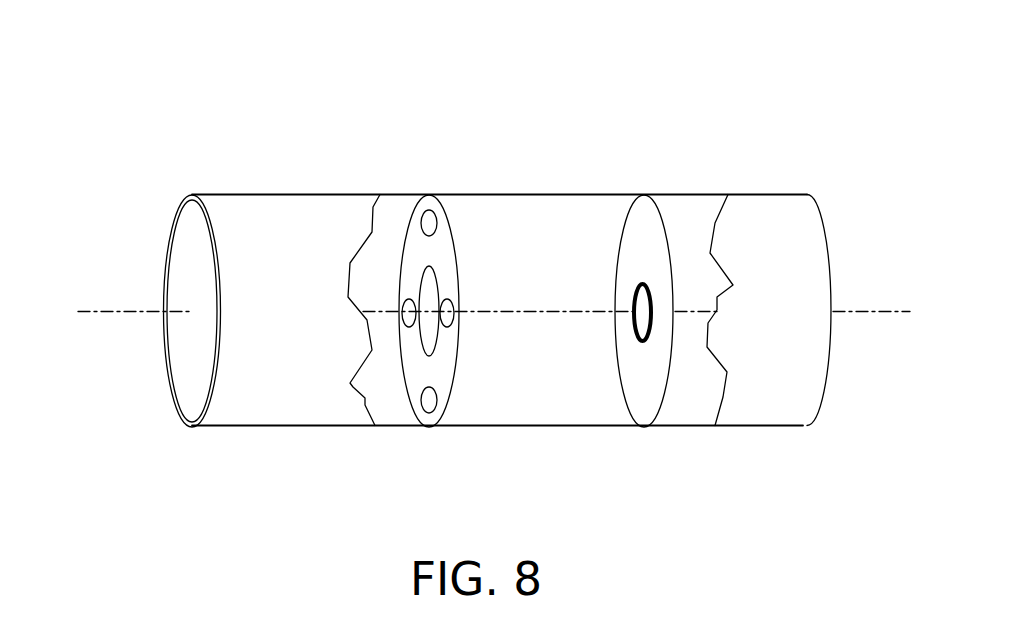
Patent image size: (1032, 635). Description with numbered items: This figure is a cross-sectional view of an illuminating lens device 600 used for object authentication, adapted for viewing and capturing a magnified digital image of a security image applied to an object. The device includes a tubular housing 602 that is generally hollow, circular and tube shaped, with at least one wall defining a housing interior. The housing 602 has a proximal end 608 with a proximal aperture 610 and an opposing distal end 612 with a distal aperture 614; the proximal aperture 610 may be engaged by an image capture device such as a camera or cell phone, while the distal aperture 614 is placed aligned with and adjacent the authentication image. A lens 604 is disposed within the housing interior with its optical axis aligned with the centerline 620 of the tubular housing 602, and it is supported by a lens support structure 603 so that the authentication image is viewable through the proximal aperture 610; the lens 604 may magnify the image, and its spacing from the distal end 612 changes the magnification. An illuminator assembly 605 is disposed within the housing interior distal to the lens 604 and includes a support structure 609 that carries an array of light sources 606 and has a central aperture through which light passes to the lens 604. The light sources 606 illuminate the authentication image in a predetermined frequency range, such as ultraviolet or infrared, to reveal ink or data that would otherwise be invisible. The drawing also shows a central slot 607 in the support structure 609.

The illuminating lens device 600 is at (380, 63).
The tubular housing 602 is at (567, 192).
The lens support structure 603 is at (665, 232).
The lens 604 is at (636, 314).
The illuminator assembly 605 is at (497, 364).
The light sources 606 is at (429, 208).
The central slot 607 is at (437, 335).
The proximal end 608 is at (191, 193).
The support structure 609 is at (403, 385).
The proximal aperture 610 is at (188, 278).
The distal end 612 is at (803, 427).
The distal aperture 614 is at (838, 298).
The centerline 620 is at (122, 312).